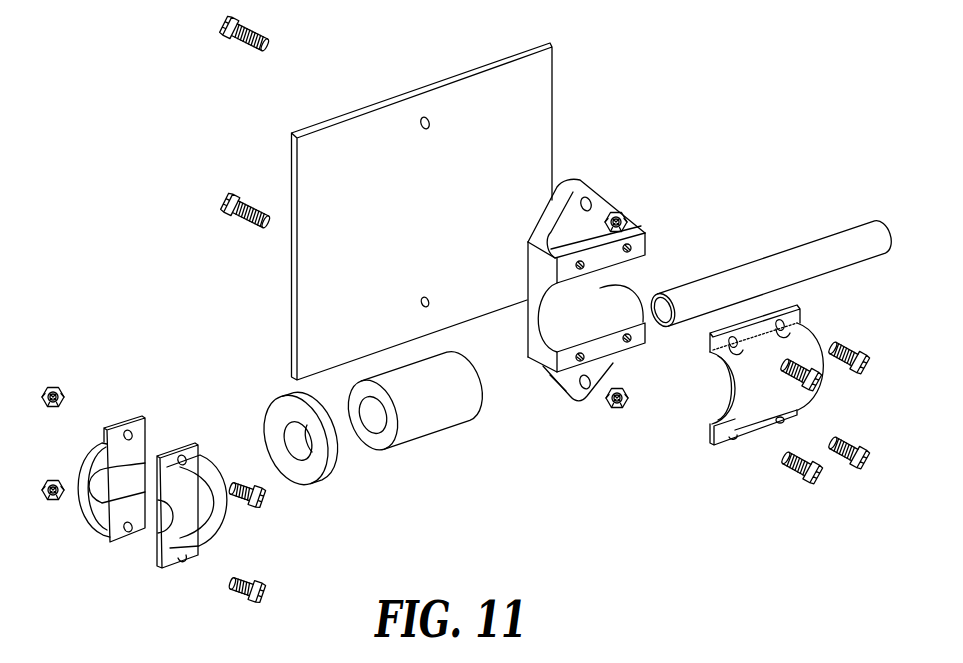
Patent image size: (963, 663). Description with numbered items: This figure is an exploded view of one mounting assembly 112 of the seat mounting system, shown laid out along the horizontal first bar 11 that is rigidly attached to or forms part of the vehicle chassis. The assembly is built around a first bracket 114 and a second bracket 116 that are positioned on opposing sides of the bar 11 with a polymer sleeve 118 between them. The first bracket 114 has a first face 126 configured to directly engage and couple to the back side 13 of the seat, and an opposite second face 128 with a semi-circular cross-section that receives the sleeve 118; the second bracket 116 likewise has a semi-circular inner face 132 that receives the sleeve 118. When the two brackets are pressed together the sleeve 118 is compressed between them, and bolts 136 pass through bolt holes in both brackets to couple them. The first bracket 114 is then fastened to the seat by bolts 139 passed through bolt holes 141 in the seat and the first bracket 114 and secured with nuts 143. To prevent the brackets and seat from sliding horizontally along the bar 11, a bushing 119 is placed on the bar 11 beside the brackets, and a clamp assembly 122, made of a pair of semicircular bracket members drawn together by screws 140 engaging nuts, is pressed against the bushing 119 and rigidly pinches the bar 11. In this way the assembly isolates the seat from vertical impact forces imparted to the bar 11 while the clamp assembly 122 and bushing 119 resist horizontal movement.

The first bar 11 is at (888, 213).
The back side 13 is at (494, 153).
The mounting assembly 112 is at (704, 303).
The first bracket 114 is at (617, 299).
The second bracket 116 is at (738, 402).
The polymer sleeve 118 is at (410, 437).
The bushing 119 is at (307, 490).
The clamp assembly 122 is at (118, 566).
The first face 126 is at (528, 336).
The second face 128 is at (607, 288).
The inner face 132 is at (719, 418).
The bolts 136 is at (795, 470).
The bolts 139 is at (248, 29).
The screws 140 is at (250, 578).
The bolt holes 141 is at (423, 117).
The nuts 143 is at (618, 408).